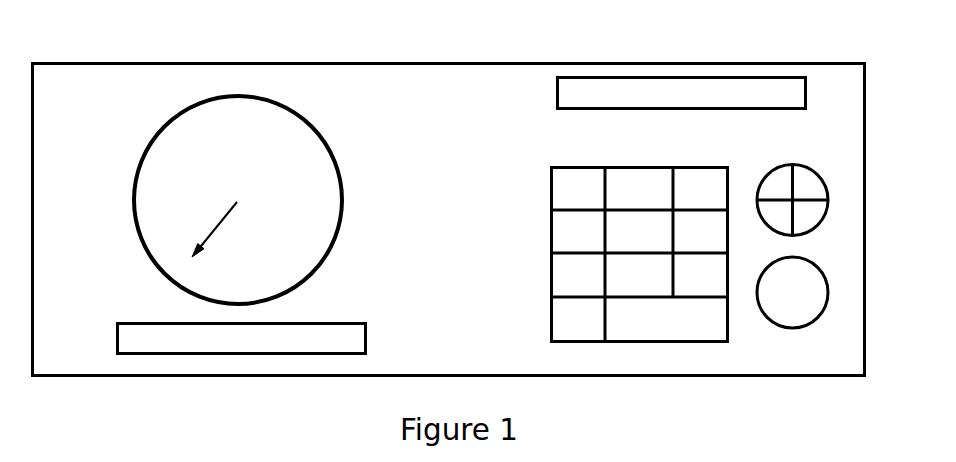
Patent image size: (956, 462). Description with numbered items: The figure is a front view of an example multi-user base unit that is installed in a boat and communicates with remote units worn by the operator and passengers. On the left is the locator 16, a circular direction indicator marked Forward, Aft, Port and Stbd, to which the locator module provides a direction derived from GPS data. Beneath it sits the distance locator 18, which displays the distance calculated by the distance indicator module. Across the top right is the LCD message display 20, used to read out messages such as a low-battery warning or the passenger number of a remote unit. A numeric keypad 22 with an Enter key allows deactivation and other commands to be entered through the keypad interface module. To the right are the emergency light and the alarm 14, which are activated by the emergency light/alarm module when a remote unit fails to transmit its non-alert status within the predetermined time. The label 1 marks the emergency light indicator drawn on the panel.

The emergency light 1 is at (821, 196).
The alarm 14 is at (815, 300).
The locator 16 is at (201, 114).
The distance locator 18 is at (322, 341).
The LCD message display 20 is at (616, 90).
The keypad 22 is at (613, 333).